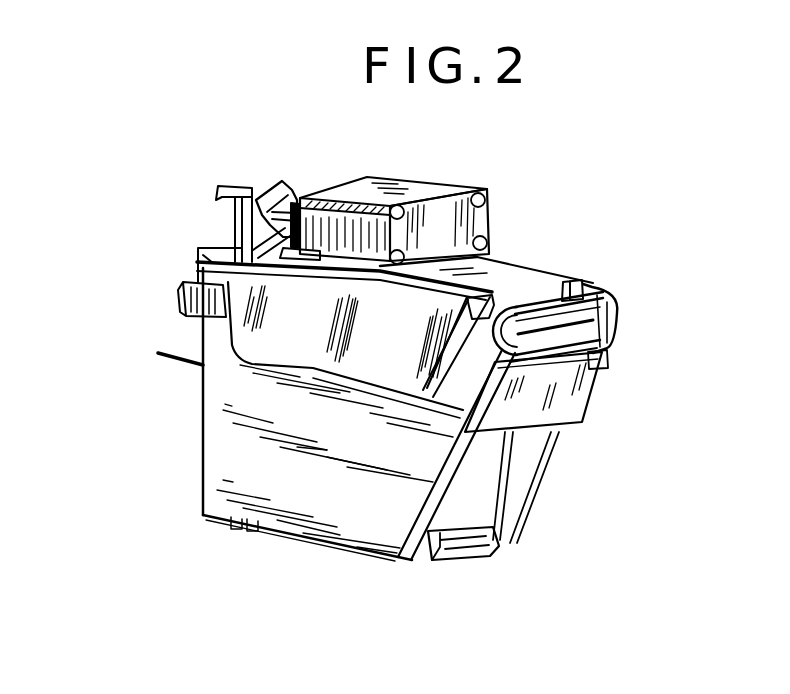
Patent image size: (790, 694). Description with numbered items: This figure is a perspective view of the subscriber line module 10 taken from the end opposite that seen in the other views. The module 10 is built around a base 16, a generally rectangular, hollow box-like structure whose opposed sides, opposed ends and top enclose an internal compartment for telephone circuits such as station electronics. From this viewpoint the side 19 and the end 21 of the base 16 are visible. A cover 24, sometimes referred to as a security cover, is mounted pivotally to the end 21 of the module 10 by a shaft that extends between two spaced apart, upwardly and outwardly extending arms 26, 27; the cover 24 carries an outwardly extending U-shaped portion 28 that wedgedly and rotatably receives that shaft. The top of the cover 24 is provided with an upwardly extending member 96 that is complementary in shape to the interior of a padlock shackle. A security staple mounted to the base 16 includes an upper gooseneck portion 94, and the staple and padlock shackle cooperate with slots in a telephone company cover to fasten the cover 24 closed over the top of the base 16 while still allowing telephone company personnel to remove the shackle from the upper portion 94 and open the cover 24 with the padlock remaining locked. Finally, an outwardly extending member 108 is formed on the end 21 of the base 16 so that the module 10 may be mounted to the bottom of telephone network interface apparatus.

The line module 10 is at (626, 200).
The base 16 is at (190, 464).
The side 19 is at (362, 511).
The end 21 is at (467, 497).
The cover 24 is at (250, 301).
The arm 26 is at (616, 324).
The arm 27 is at (500, 300).
The outwardly extending U-shaped portion 28 is at (568, 282).
The upper gooseneck portion 94 is at (280, 182).
The upwardly extending member 96 is at (310, 190).
The outwardly extending member 108 is at (474, 553).